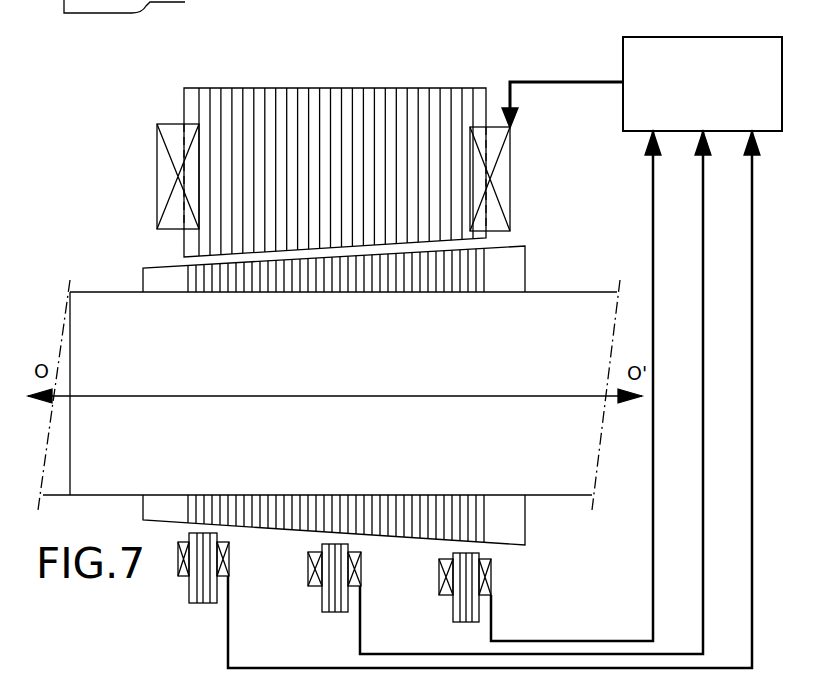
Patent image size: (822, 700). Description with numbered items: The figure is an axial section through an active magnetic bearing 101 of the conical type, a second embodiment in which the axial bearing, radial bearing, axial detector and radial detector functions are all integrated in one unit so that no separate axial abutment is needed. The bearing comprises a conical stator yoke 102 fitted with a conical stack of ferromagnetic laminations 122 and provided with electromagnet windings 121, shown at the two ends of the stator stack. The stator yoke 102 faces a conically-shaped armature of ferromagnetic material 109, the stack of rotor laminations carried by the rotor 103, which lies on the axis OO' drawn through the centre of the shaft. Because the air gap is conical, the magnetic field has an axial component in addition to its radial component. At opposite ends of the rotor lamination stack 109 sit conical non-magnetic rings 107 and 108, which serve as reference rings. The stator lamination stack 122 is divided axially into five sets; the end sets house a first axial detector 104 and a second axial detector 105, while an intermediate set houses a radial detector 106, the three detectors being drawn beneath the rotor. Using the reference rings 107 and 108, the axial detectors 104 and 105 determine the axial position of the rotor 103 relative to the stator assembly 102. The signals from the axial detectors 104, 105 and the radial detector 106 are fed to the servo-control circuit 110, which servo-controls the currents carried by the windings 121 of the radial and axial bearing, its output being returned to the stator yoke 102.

The active magnetic bearing 101 is at (292, 77).
The stator yoke 102 is at (470, 82).
The rotor 103 is at (537, 317).
The first axial detector 104 is at (200, 603).
The second axial detector 105 is at (462, 598).
The radial detector 106 is at (330, 600).
The non-magnetic ring 107 is at (152, 280).
The non-magnetic ring 108 is at (515, 265).
The armature of ferromagnetic material 109 is at (332, 268).
The servo-control circuit 110 is at (627, 50).
The electromagnet windings 121 is at (166, 166).
The stack of ferromagnetic laminations 122 is at (432, 100).